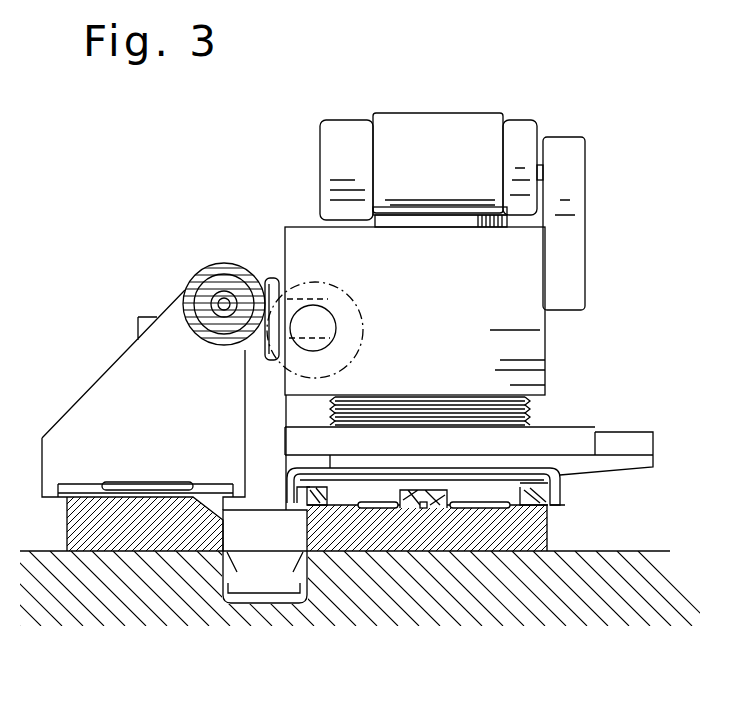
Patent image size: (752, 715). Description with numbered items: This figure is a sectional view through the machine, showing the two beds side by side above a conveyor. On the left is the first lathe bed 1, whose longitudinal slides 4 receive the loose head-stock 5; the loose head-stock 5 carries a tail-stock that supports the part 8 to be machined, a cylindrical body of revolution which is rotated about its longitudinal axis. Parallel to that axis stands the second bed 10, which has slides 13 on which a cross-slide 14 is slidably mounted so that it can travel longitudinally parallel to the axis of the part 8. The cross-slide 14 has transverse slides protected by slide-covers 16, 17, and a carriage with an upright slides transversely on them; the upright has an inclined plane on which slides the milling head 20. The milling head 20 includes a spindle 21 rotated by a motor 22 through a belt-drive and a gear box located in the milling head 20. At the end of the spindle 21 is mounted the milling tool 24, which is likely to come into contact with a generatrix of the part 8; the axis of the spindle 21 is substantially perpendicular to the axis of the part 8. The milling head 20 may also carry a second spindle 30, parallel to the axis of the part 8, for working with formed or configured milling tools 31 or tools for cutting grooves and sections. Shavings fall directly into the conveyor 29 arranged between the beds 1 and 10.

The first lathe bed 1 is at (67, 529).
The longitudinal slides 4 is at (75, 484).
The loose head-stock 5 is at (108, 372).
The part to be machined 8 is at (210, 283).
The second bed 10 is at (537, 533).
The slides 13 is at (565, 490).
The cross-slide 14 is at (498, 493).
The slide-cover 16 is at (297, 432).
The slide-cover 17 is at (620, 442).
The milling head 20 is at (520, 326).
The spindle 21 is at (313, 297).
The motor 22 is at (430, 135).
The milling tool 24 is at (277, 280).
The conveyor 29 is at (257, 597).
The second spindle 30 is at (335, 318).
The formed milling tools 31 is at (363, 330).